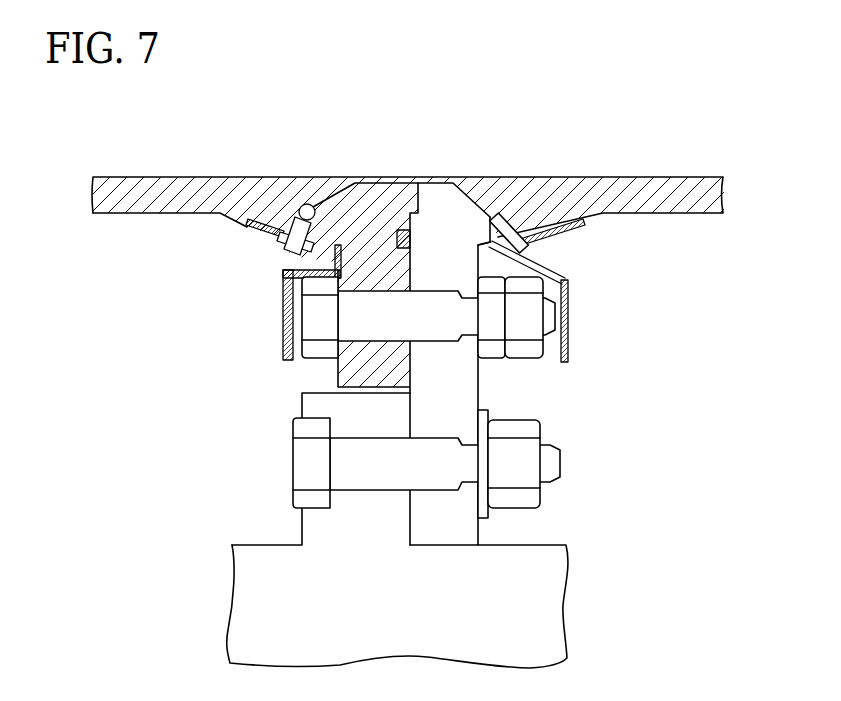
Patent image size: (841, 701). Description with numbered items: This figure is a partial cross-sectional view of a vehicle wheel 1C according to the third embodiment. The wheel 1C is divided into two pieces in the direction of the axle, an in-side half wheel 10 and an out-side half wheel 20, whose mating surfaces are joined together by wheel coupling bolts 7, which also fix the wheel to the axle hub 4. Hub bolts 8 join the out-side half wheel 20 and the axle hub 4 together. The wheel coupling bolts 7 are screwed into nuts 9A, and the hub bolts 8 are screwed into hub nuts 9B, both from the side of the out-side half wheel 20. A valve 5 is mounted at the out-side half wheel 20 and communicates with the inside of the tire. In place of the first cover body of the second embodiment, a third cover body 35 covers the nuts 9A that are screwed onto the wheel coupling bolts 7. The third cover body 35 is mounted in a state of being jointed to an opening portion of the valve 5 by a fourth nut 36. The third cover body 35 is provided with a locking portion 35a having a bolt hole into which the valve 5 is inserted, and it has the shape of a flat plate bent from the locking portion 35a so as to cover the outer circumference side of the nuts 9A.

The wheel 1C is at (651, 150).
The axle hub 4 is at (558, 595).
The valve 5 is at (503, 228).
The wheel coupling bolts 7 is at (307, 362).
The hub bolts 8 is at (293, 474).
The nuts 9A is at (548, 360).
The hub nuts 9B is at (540, 505).
The in-side half wheel 10 is at (328, 376).
The out-side half wheel 20 is at (496, 392).
The third cover body 35 is at (568, 316).
The locking portion 35a is at (562, 230).
The fourth nut 36 is at (535, 247).